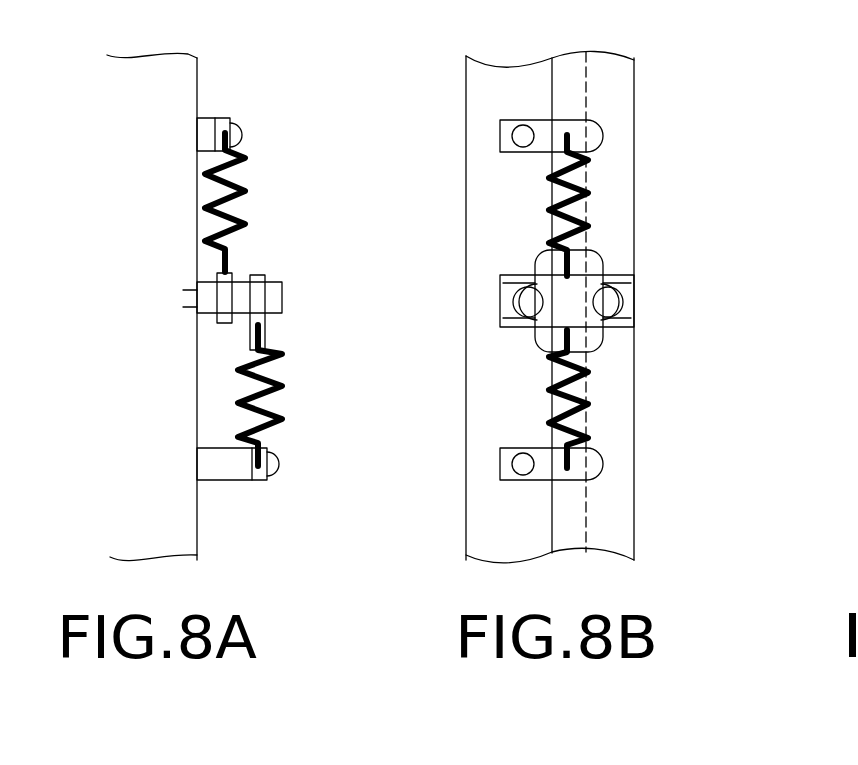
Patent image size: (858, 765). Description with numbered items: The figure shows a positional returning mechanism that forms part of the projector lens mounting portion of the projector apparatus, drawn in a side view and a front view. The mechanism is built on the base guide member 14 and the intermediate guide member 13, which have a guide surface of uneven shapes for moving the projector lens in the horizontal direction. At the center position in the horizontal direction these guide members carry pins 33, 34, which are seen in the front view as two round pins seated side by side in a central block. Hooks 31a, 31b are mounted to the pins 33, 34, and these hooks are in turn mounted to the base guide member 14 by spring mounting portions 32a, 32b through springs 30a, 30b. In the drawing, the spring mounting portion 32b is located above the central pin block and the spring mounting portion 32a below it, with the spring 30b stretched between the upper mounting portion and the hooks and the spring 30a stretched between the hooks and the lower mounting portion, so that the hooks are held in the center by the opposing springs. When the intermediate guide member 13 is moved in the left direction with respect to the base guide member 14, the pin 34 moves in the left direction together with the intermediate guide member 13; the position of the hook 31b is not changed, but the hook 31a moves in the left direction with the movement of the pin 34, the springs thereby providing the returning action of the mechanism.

In FIG. 8A, the spring 30a is at (282, 416).
In FIG. 8A, the spring 30b is at (245, 191).
In FIG. 8A, the hook 31a is at (266, 279).
In FIG. 8A, the hook 31b is at (217, 324).
In FIG. 8B, the spring mounting portion 32a is at (603, 460).
In FIG. 8B, the spring mounting portion 32b is at (603, 135).
In FIG. 8B, the pin 33 is at (512, 300).
In FIG. 8B, the pin 34 is at (618, 302).
In FIG. 8B, the intermediate guide member 13 is at (627, 543).
In FIG. 8B, the base guide member 14 is at (480, 530).